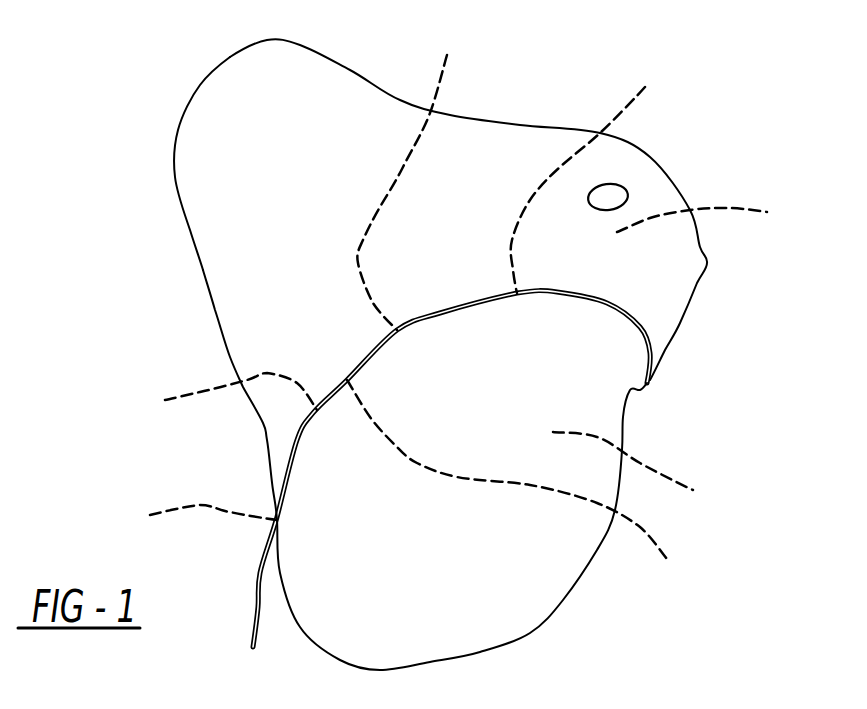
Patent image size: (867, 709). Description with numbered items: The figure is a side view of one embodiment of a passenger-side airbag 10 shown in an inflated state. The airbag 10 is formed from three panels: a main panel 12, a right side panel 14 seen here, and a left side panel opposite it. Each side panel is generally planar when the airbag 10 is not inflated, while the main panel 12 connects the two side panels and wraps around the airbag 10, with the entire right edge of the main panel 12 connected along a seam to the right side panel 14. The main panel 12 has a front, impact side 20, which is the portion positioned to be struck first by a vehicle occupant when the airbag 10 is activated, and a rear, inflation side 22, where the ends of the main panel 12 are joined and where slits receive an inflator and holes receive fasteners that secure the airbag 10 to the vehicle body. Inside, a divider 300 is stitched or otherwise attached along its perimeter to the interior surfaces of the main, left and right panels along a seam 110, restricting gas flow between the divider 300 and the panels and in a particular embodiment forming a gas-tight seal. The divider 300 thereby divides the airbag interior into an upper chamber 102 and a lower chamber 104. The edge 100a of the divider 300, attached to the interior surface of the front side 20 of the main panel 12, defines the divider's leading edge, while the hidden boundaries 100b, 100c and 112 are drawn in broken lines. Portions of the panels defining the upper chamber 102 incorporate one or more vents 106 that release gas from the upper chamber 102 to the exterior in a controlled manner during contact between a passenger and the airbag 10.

The passenger-side airbag 10 is at (434, 352).
The main panel 12 is at (200, 85).
The right side panel 14 is at (512, 153).
The front impact side 20 is at (175, 177).
The rear inflation side 22 is at (680, 323).
The edge of divider 100a is at (188, 521).
The second region 100b is at (415, 176).
The third region 100c is at (217, 395).
The upper chamber 102 is at (713, 217).
The lower chamber 104 is at (641, 473).
The vent 106 is at (617, 183).
The seam 110 is at (442, 488).
The hidden boundary 112 is at (590, 176).
The divider 300 is at (526, 488).